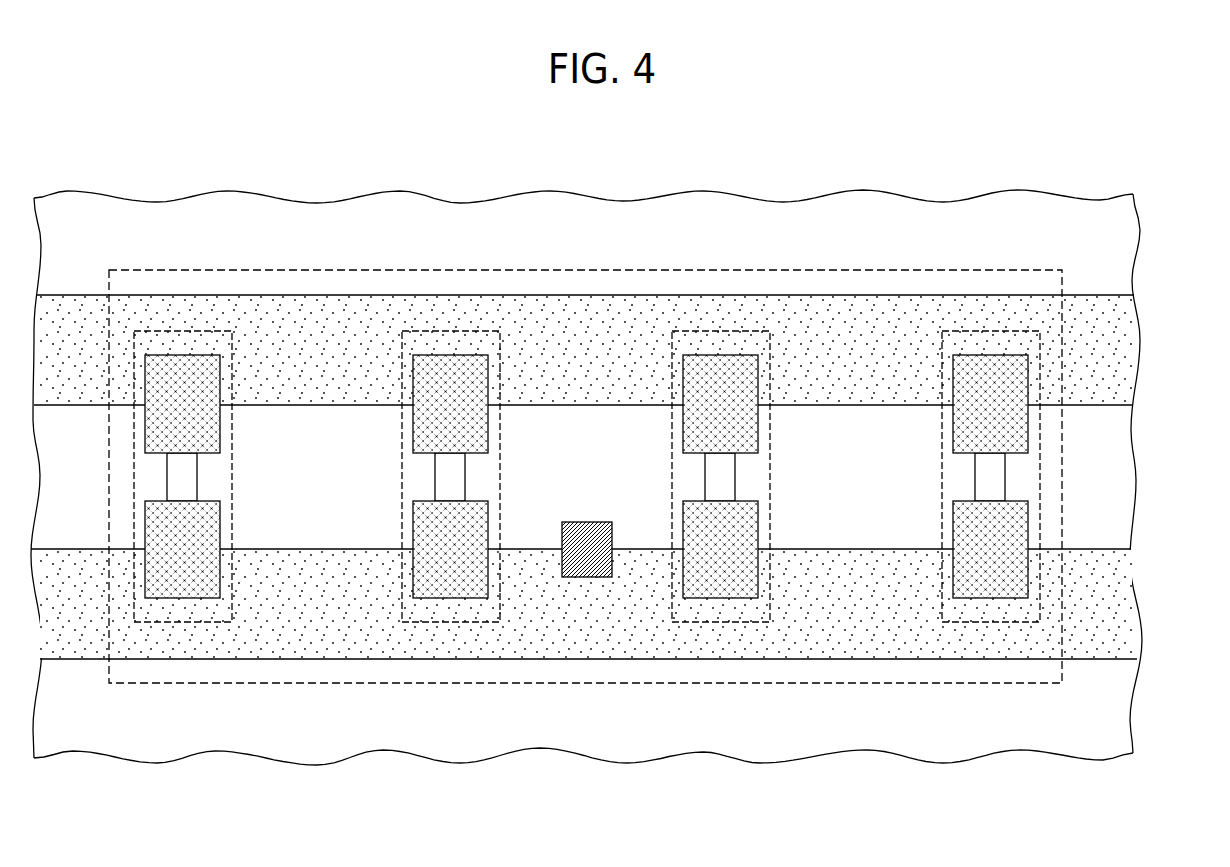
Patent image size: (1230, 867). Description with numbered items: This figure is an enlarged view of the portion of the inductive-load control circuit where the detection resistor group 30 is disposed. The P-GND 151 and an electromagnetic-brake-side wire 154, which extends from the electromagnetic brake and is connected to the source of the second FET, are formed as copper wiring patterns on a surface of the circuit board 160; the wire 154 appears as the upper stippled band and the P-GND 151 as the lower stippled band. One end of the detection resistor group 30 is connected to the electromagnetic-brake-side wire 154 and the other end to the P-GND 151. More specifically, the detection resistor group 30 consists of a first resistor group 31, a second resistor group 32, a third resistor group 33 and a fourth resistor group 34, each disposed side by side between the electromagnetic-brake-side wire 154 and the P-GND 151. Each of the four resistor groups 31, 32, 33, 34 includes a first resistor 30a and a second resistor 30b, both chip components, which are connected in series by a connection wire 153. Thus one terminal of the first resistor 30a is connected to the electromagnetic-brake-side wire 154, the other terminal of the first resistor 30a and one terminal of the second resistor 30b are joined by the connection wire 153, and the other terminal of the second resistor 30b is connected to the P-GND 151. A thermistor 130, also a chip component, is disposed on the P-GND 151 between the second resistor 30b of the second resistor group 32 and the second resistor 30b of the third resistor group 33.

The detection resistor group 30 is at (850, 270).
The first resistor group 31 is at (197, 331).
The second resistor group 32 is at (465, 331).
The third resistor group 33 is at (738, 331).
The fourth resistor group 34 is at (1005, 331).
The first resistor 30a is at (158, 355).
The second resistor 30b is at (180, 598).
The connection wire 153 is at (197, 472).
The electromagnetic-brake-side wire 154 is at (1107, 350).
The P-GND 151 is at (1110, 600).
The circuit board 160 is at (1110, 714).
The thermistor 130 is at (595, 522).